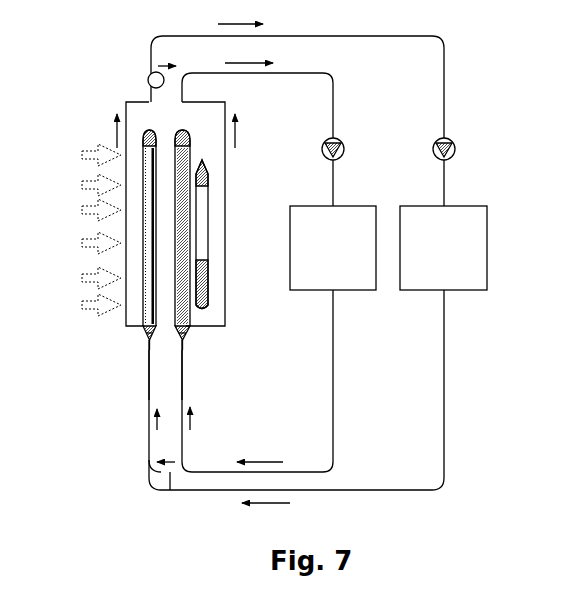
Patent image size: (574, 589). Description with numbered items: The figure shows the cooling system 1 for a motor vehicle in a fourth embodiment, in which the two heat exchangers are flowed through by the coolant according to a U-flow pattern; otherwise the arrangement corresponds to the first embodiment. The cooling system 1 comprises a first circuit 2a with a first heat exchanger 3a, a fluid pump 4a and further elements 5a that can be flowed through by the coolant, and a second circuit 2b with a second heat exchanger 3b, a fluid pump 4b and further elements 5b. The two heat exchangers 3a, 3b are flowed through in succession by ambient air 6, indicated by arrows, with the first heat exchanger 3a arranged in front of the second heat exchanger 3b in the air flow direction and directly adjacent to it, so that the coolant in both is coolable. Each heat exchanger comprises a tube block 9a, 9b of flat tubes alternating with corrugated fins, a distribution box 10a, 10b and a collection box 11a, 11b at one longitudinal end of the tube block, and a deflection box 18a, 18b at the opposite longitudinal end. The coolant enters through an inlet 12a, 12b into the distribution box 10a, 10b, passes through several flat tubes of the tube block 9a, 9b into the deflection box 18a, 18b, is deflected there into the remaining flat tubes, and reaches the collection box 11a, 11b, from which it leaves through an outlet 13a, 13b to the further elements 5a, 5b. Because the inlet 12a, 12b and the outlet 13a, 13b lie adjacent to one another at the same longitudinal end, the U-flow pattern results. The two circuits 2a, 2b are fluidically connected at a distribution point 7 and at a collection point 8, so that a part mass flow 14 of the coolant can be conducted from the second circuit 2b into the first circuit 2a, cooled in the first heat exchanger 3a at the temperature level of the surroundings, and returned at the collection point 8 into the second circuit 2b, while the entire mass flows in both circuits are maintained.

The cooling system 1 is at (505, 88).
The first circuit 2a is at (447, 393).
The second circuit 2b is at (336, 393).
The first heat exchanger 3a is at (90, 228).
The second heat exchanger 3b is at (231, 228).
The fluid pump 4a is at (452, 142).
The fluid pump 4b is at (341, 141).
The further elements 5a is at (461, 263).
The further elements 5b is at (348, 263).
The ambient air 6 is at (92, 308).
The distribution point 7 is at (170, 490).
The collection point 8 is at (150, 87).
The tube block 9a is at (150, 200).
The tube block 9b is at (180, 205).
The distribution box 10a is at (157, 352).
The distribution box 10b is at (183, 345).
The collection box 11a is at (150, 337).
The collection box 11b is at (183, 338).
The inlet 12a is at (152, 345).
The inlet 12b is at (183, 358).
The outlet 13a is at (144, 330).
The outlet 13b is at (186, 331).
The part mass flow 14 is at (158, 66).
The deflection box 18a is at (146, 138).
The deflection box 18b is at (188, 139).